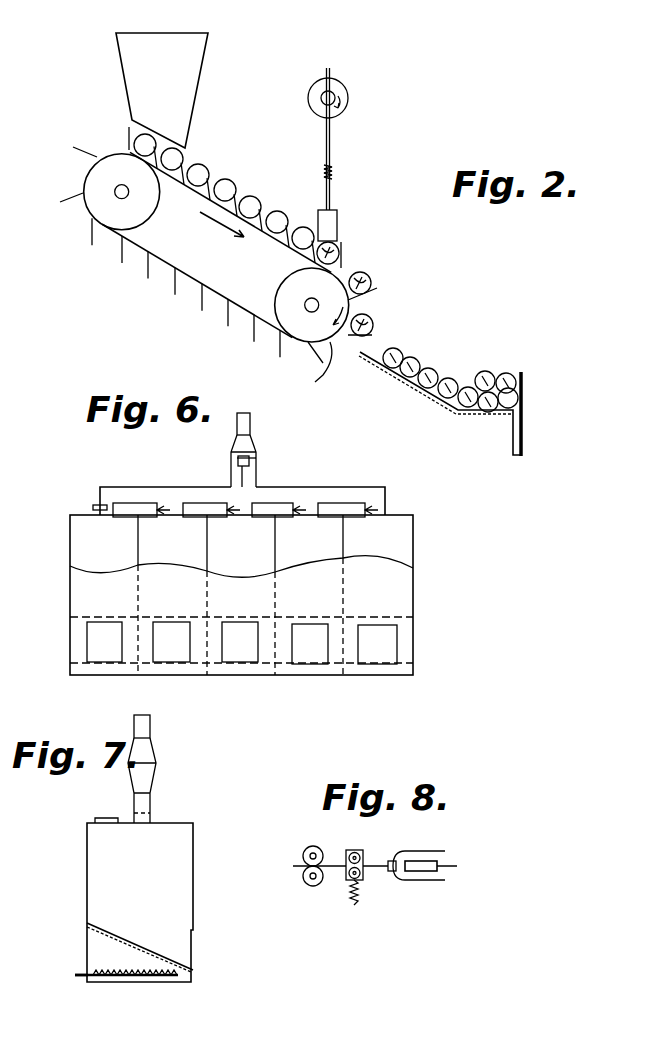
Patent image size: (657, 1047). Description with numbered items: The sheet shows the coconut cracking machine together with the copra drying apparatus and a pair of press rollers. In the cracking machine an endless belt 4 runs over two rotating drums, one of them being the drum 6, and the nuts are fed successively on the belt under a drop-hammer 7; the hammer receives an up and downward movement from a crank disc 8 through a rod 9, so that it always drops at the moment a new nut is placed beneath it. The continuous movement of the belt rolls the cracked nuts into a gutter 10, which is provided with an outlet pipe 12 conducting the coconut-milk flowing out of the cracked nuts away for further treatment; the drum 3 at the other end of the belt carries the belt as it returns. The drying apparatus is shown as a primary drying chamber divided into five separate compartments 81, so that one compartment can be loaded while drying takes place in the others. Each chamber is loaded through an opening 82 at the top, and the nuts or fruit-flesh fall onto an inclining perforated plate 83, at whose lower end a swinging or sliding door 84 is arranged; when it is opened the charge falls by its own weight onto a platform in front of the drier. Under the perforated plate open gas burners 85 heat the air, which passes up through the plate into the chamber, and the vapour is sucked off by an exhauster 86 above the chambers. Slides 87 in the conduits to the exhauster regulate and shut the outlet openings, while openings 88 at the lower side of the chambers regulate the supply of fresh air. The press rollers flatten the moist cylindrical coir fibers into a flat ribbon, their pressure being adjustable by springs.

In FIG. 2, the drum roller 3 is at (92, 222).
In FIG. 2, the endless belt 4 is at (220, 192).
In FIG. 2, the rotating drum 6 is at (350, 272).
In FIG. 2, the drop-hammer 7 is at (338, 225).
In FIG. 2, the crank disc 8 is at (340, 92).
In FIG. 2, the rod 9 is at (331, 153).
In FIG. 2, the gutter 10 is at (524, 398).
In FIG. 2, the outlet pipe 12 is at (527, 446).
In FIG. 6, the compartments 81 is at (238, 595).
In FIG. 7, the opening 82 is at (108, 820).
In FIG. 7, the perforated plate 83 is at (105, 928).
In FIG. 6, the swinging or sliding door 84 is at (242, 643).
In FIG. 7, the swinging or sliding door 84 is at (194, 952).
In FIG. 7, the gas burners 85 is at (110, 978).
In FIG. 6, the exhauster 86 is at (258, 455).
In FIG. 6, the slides 87 is at (92, 505).
In FIG. 6, the openings 88 is at (258, 478).
In FIG. 7, the openings 88 is at (88, 980).